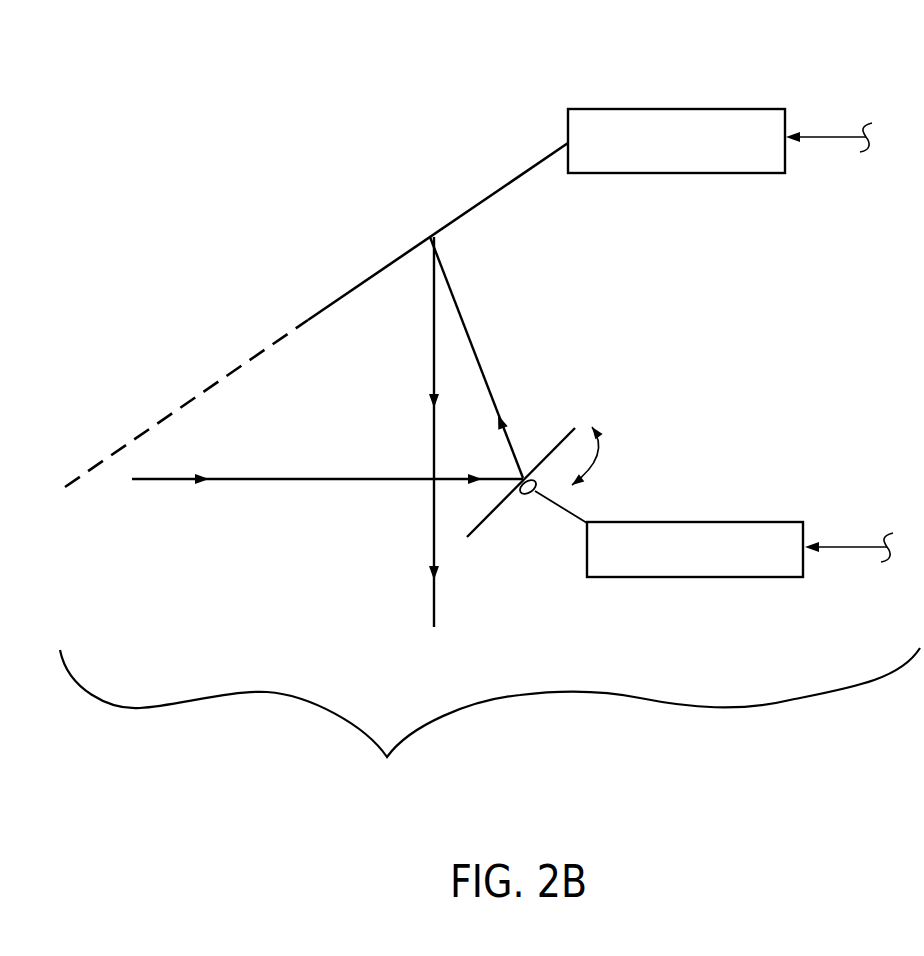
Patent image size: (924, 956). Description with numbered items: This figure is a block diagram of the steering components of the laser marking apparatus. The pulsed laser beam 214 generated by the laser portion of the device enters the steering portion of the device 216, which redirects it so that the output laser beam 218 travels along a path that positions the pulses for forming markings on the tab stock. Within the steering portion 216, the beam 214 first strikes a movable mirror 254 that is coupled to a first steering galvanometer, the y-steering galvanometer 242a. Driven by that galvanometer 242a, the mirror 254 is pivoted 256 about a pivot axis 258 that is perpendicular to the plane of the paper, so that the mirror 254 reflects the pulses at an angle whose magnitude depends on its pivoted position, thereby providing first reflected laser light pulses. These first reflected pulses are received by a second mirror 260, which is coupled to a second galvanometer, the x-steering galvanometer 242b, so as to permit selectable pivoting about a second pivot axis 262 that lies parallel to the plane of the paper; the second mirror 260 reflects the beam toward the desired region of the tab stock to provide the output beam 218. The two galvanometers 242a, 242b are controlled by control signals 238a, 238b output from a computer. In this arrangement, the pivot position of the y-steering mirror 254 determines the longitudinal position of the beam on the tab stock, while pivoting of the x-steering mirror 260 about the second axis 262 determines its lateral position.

The pulsed laser beam 214 is at (157, 481).
The steering portion of the device 216 is at (387, 760).
The output laser beam 218 is at (430, 608).
The control signal 238a is at (835, 547).
The control signal 238b is at (827, 136).
The y-steering galvanometer 242a is at (705, 522).
The x-steering galvanometer 242b is at (638, 117).
The mirror 254 is at (553, 443).
The pivoting of the mirror 256 is at (598, 450).
The pivot axis 258 is at (522, 495).
The second mirror 260 is at (445, 229).
The second pivot axis 262 is at (172, 408).